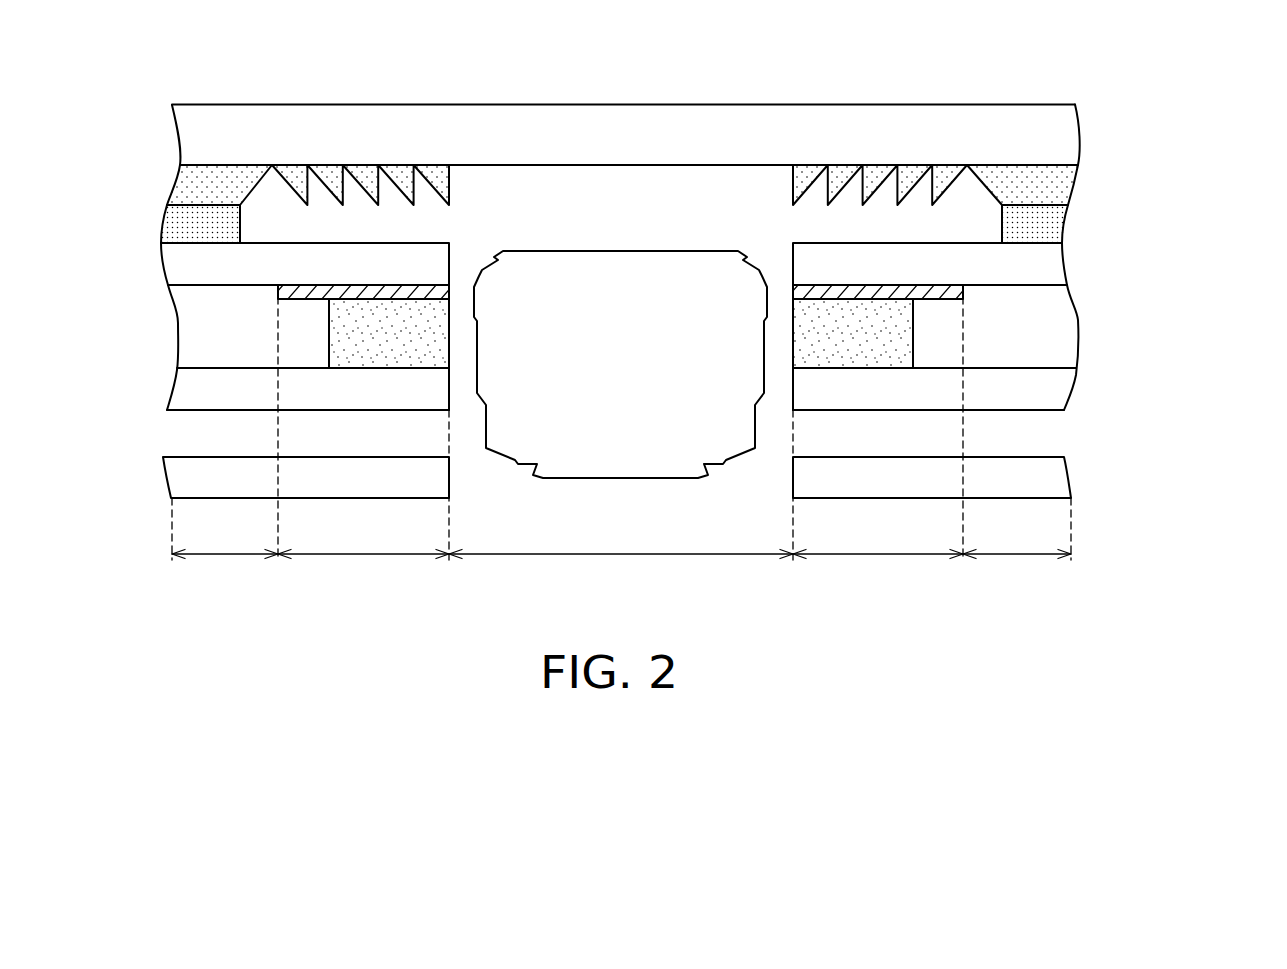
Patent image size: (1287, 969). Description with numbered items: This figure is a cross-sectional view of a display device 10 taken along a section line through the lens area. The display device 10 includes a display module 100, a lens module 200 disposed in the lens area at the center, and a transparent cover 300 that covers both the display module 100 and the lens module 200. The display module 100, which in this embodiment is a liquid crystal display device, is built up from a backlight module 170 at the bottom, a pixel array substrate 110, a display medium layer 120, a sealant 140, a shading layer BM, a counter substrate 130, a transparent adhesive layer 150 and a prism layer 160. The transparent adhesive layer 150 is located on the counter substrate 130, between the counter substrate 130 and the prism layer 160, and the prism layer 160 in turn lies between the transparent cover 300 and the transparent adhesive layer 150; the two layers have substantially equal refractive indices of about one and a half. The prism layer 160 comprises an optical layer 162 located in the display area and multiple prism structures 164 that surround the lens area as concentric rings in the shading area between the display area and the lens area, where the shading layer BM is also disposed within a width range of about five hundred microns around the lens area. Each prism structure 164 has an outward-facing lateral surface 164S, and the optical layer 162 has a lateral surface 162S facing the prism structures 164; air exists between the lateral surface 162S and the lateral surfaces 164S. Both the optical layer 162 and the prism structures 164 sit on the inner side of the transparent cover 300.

The display device 10 is at (668, 329).
The display module 100 is at (668, 275).
The pixel array substrate 110 is at (1042, 387).
The display medium layer 120 is at (1050, 326).
The counter substrate 130 is at (1050, 265).
The sealant 140 is at (883, 339).
The transparent adhesive layer 150 is at (1063, 225).
The prism layer 160 is at (715, 127).
The optical layer 162 is at (1057, 190).
The lateral surface of optical layer 162S is at (263, 196).
The prism structures 164 is at (943, 179).
The lateral surface of prism structure 164S is at (283, 197).
The backlight module 170 is at (1038, 475).
The lens module 200 is at (680, 251).
The transparent cover 300 is at (1055, 139).
The shading layer BM is at (963, 297).